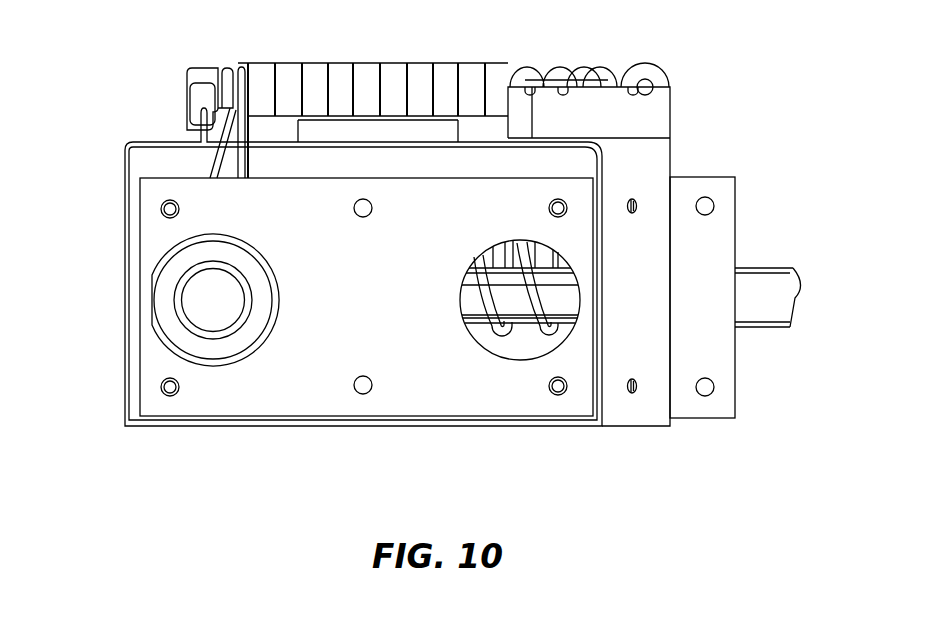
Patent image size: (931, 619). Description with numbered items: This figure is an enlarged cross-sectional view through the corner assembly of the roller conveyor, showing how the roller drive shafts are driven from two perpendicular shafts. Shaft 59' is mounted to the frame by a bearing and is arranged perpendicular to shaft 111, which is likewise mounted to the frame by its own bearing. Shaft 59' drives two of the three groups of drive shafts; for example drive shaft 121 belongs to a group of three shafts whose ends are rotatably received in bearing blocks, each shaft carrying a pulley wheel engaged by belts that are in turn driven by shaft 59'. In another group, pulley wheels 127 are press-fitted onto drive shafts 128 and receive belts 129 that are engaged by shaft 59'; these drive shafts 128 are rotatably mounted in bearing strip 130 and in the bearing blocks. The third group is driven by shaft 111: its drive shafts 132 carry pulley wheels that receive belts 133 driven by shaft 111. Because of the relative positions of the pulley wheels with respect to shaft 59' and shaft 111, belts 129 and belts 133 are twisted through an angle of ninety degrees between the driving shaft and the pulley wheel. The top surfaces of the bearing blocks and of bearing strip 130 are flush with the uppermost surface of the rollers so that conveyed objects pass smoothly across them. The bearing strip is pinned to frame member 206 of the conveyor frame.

The shaft 59' is at (161, 300).
The shaft 111 is at (473, 305).
The drive shaft 121 is at (553, 85).
The pulley wheel 127 is at (191, 73).
The drive shaft 128 is at (190, 77).
The belt 129 is at (213, 158).
The bearing strip 130 is at (193, 96).
The drive shaft 132 is at (652, 90).
The belt 133 is at (550, 333).
The frame member 206 is at (125, 142).